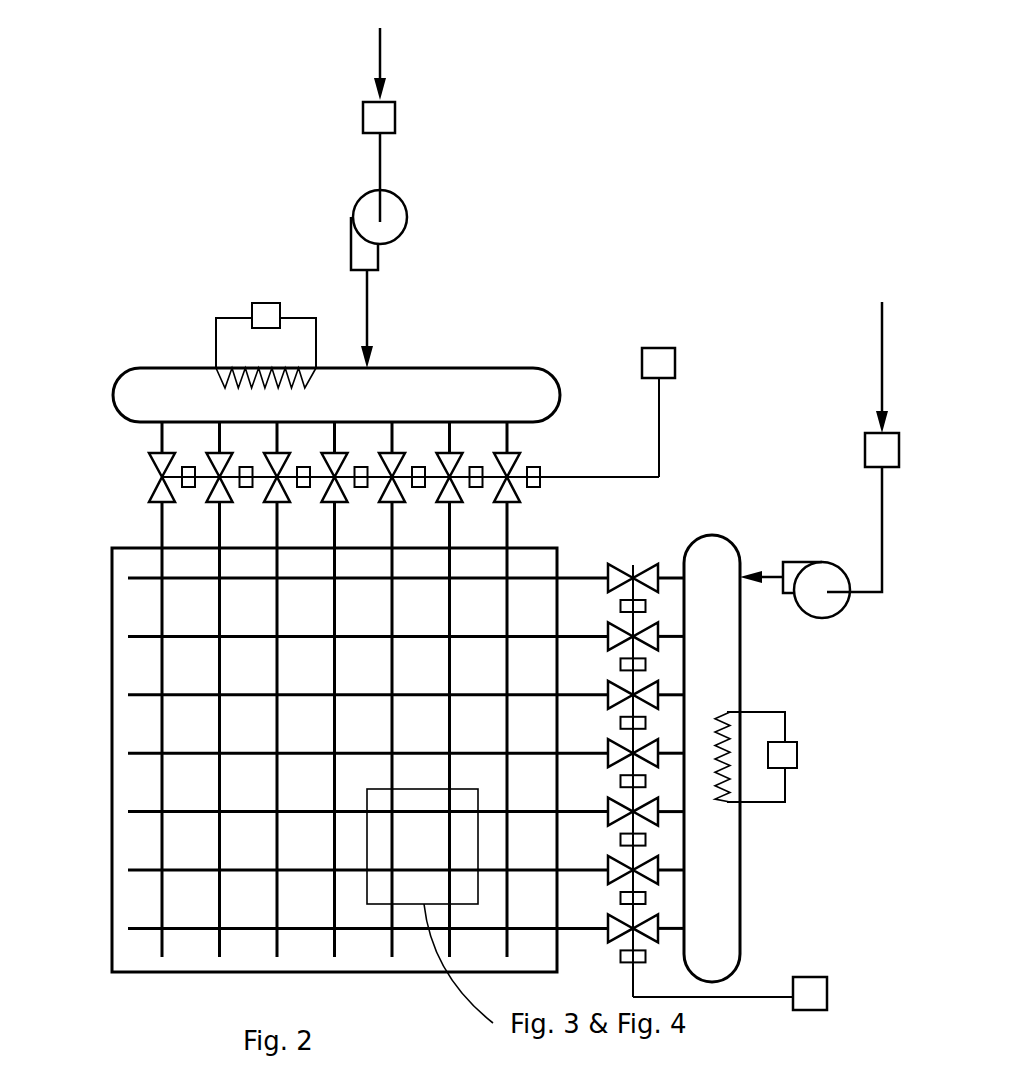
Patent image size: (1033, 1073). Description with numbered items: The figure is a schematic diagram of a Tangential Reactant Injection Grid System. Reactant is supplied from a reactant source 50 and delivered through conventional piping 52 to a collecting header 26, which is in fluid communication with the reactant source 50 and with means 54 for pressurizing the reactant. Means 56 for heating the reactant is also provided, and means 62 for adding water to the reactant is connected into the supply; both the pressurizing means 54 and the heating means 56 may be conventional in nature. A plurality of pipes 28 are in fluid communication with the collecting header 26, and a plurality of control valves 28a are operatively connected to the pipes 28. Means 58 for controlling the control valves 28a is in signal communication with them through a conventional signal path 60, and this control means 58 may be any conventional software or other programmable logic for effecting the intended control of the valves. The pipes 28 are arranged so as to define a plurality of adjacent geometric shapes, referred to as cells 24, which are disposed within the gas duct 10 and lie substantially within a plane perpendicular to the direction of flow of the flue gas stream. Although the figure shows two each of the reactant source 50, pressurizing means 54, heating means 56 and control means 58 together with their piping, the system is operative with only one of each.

The gas duct 10 is at (112, 660).
The cells 24 is at (205, 862).
The collecting header 26 is at (425, 368).
The pipes 28 is at (162, 439).
The control valves 28a is at (152, 490).
The reactant source 50 is at (390, 102).
The conventional piping 52 is at (382, 150).
The means for pressurizing the reactant 54 is at (406, 224).
The means for heating the reactant 56 is at (235, 290).
The means for controlling the control valves 58 is at (667, 348).
The conventional signal path 60 is at (661, 427).
The means for adding water to the reactant 62 is at (379, 58).